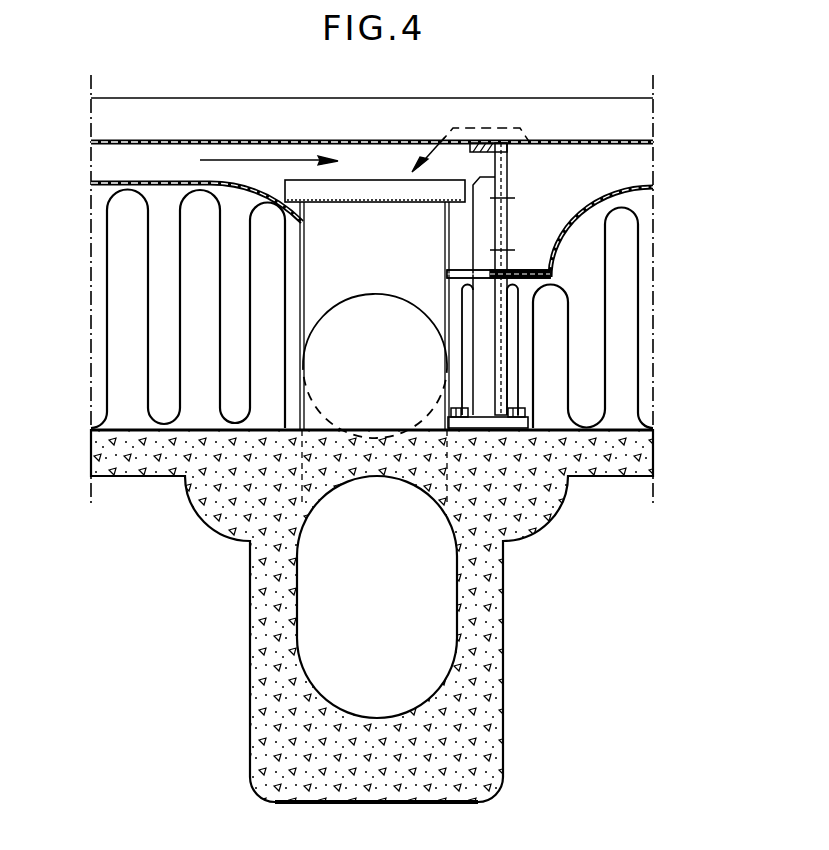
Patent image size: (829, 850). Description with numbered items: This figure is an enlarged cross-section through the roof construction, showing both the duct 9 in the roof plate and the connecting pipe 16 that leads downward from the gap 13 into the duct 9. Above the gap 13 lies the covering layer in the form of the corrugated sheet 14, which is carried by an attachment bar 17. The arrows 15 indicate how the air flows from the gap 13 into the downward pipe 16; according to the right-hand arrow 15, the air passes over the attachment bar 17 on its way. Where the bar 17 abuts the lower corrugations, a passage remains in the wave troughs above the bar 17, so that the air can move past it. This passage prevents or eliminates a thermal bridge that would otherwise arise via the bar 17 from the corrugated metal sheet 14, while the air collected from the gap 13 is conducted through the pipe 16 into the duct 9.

The duct 9 is at (320, 615).
The gap 13 is at (177, 162).
The corrugated sheet 14 is at (365, 132).
The arrows 15 is at (258, 160).
The connecting pipe 16 is at (332, 358).
The attachment bar 17 is at (507, 204).